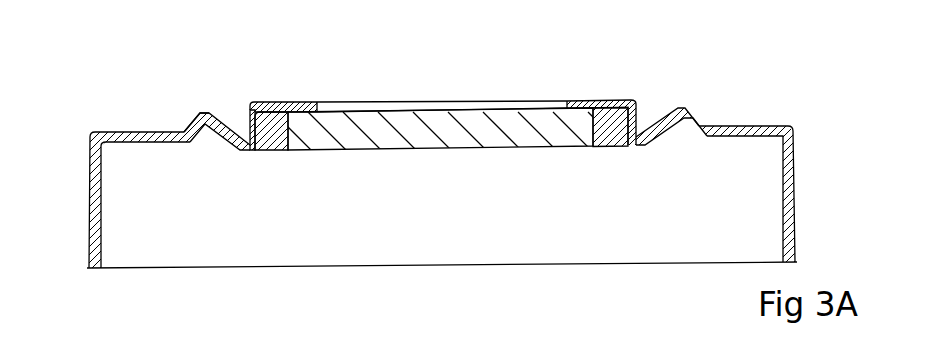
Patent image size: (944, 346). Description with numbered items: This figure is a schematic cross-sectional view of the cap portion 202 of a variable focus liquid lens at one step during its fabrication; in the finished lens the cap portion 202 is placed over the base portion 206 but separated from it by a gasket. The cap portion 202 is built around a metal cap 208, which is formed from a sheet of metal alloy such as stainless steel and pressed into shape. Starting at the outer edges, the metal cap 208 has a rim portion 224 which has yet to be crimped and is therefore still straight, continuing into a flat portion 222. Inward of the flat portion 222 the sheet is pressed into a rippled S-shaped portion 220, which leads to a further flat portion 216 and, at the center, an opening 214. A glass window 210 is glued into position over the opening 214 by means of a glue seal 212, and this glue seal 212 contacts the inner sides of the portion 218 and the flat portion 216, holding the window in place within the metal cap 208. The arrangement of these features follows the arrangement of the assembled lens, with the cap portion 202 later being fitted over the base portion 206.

The cap portion 202 is at (98, 73).
The base portion 206 is at (268, 150).
The metal cap 208 is at (795, 155).
The glass window 210 is at (539, 147).
The glue seal 212 is at (602, 146).
The opening 214 is at (473, 102).
The flat portion 216 is at (298, 102).
The portion 218 is at (246, 124).
The rippled S-shaped portion 220 is at (204, 112).
The flat portion 222 is at (148, 131).
The rim portion 224 is at (68, 133).